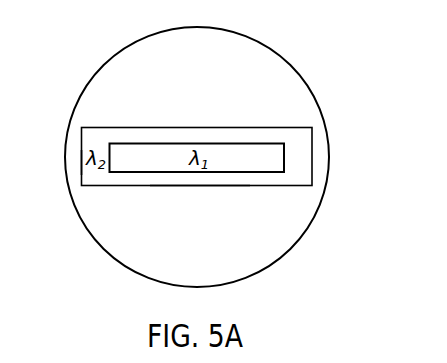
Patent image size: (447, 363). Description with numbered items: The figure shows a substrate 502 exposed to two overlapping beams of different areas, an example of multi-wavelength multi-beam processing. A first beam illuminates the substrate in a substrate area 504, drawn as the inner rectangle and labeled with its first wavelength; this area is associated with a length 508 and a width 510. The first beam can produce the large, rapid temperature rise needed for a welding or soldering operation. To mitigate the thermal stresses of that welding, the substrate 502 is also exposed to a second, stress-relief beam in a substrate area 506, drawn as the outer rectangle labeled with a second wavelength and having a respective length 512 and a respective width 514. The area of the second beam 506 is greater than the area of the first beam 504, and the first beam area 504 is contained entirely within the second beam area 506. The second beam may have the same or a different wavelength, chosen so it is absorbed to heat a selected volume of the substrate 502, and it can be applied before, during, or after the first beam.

The substrate 502 is at (309, 90).
The substrate area of first beam 504 is at (201, 151).
The substrate area of second beam 506 is at (197, 180).
The length of first beam area 508 is at (231, 173).
The width of first beam area 510 is at (284, 157).
The length of second beam area 512 is at (115, 127).
The width of second beam area 514 is at (81, 162).